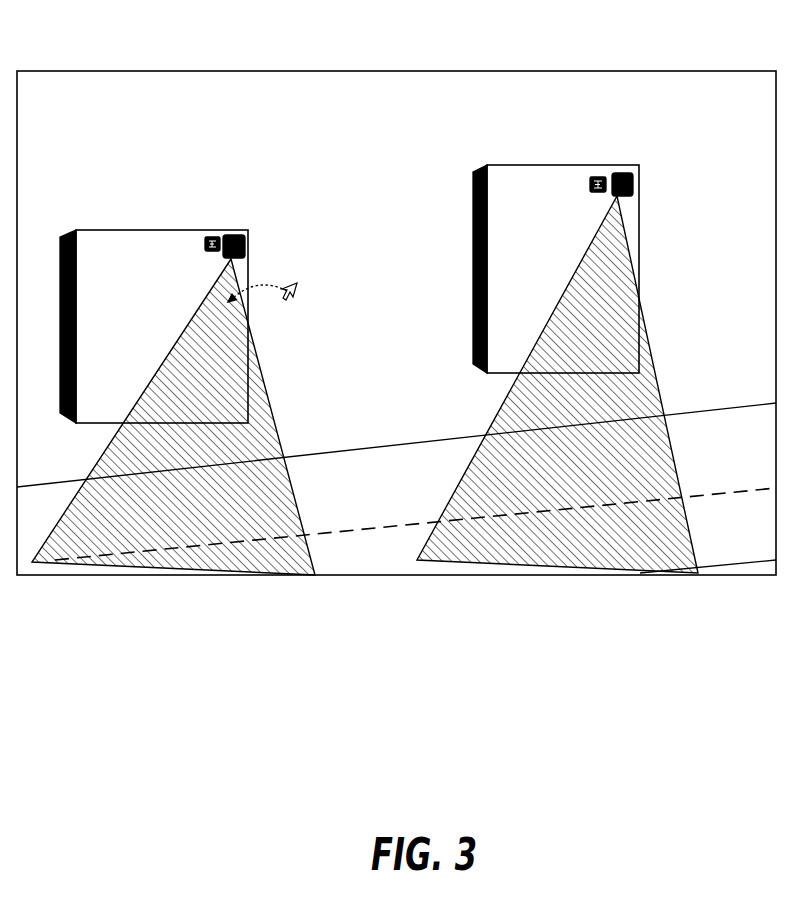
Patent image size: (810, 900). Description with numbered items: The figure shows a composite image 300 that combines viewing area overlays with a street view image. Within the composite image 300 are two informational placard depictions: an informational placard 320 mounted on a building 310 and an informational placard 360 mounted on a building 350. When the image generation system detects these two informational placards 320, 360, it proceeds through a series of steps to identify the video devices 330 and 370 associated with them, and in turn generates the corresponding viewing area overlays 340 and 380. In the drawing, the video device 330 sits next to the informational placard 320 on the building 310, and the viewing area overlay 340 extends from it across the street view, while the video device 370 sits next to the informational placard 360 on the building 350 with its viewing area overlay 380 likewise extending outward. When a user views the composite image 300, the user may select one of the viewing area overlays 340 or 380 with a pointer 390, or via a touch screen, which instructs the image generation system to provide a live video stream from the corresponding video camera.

The composite image 300 is at (396, 297).
The building 310 is at (154, 304).
The informational placard 320 is at (176, 251).
The video device 330 is at (203, 262).
The viewing area overlay 340 is at (272, 405).
The building 350 is at (555, 243).
The informational placard 360 is at (568, 196).
The video device 370 is at (592, 203).
The viewing area overlay 380 is at (508, 390).
The pointer 390 is at (296, 300).